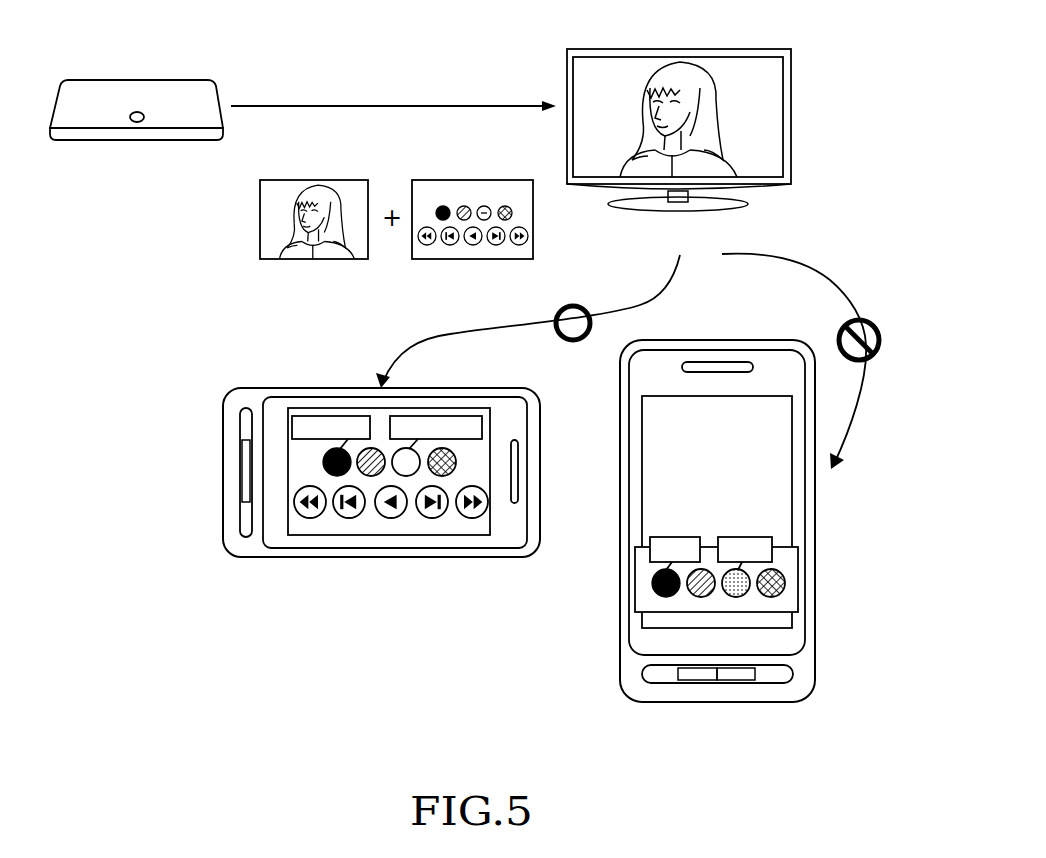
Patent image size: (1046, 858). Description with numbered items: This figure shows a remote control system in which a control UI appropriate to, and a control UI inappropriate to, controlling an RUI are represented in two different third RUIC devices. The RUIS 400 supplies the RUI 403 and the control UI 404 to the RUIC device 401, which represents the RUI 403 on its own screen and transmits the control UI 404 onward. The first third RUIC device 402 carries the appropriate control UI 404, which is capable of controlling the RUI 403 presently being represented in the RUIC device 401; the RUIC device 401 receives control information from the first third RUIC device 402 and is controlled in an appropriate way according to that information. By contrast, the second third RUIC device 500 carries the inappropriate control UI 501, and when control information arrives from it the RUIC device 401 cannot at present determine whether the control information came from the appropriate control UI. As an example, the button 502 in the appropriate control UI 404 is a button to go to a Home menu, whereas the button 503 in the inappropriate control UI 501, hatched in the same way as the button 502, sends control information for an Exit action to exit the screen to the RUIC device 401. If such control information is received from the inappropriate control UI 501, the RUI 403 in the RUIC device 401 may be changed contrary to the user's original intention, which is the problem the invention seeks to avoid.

The RUIS 400 is at (137, 80).
The RUIC device 401 is at (679, 49).
The third RUIC device #1 402 is at (408, 481).
The RUI 403 is at (313, 180).
The control UI 404 is at (472, 180).
The third RUIC device #2 500 is at (730, 530).
The inappropriate control UI 501 is at (756, 550).
The button 502 is at (330, 416).
The button 503 is at (670, 537).